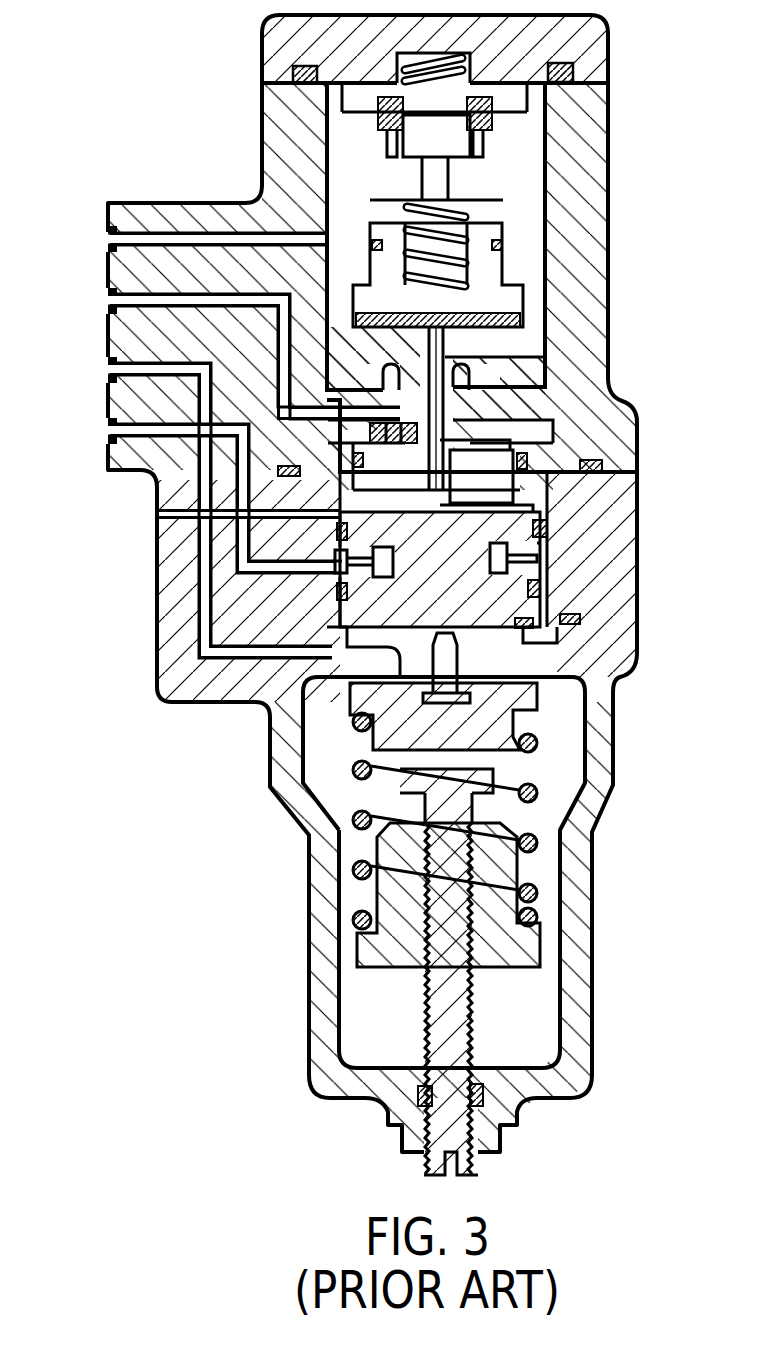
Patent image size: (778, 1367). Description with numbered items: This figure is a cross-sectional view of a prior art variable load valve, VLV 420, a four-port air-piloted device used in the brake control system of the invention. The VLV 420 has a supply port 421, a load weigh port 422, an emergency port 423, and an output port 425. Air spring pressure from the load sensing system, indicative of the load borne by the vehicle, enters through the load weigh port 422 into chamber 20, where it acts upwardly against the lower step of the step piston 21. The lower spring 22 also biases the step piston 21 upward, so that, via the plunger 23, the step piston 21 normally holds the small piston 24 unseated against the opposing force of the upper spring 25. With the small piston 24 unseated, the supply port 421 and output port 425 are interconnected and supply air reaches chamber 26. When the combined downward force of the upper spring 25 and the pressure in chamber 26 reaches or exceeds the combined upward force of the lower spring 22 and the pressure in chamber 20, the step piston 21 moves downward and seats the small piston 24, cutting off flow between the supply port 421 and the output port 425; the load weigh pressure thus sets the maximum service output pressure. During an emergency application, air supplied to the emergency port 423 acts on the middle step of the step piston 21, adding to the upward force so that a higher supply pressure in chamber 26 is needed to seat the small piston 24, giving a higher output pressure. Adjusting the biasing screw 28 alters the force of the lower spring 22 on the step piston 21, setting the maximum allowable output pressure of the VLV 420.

The variable load valve 420 is at (170, 43).
The chamber 20 is at (567, 723).
The step piston 21 is at (473, 583).
The lower spring 22 is at (537, 893).
The plunger 23 is at (463, 355).
The small piston 24 is at (523, 290).
The upper spring 25 is at (467, 252).
The chamber 26 is at (508, 430).
The biasing screw 28 is at (457, 1013).
The supply port 421 is at (108, 241).
The load weigh port 422 is at (108, 369).
The emergency port 423 is at (108, 431).
The output port 425 is at (108, 301).